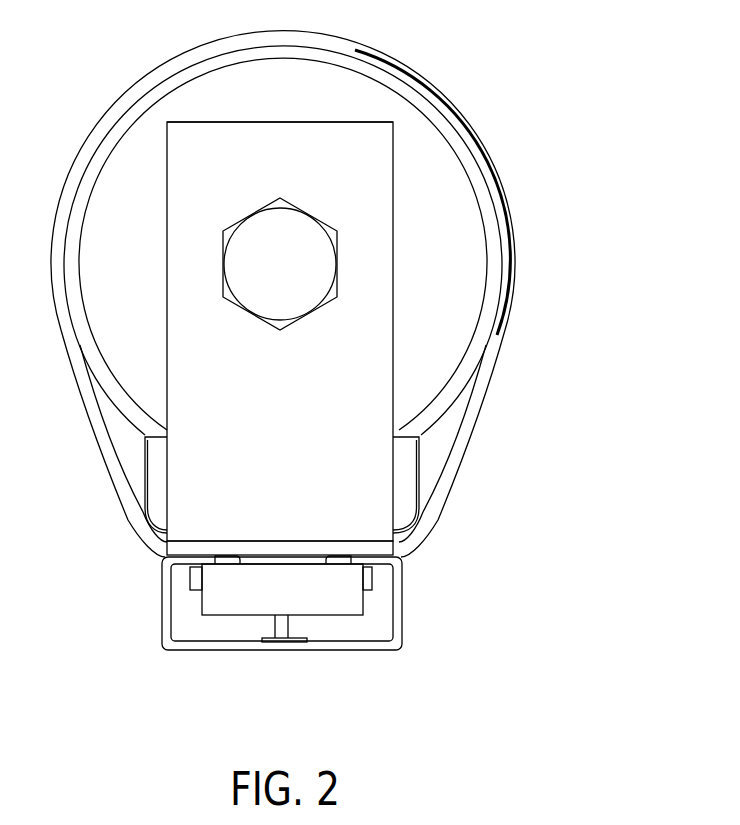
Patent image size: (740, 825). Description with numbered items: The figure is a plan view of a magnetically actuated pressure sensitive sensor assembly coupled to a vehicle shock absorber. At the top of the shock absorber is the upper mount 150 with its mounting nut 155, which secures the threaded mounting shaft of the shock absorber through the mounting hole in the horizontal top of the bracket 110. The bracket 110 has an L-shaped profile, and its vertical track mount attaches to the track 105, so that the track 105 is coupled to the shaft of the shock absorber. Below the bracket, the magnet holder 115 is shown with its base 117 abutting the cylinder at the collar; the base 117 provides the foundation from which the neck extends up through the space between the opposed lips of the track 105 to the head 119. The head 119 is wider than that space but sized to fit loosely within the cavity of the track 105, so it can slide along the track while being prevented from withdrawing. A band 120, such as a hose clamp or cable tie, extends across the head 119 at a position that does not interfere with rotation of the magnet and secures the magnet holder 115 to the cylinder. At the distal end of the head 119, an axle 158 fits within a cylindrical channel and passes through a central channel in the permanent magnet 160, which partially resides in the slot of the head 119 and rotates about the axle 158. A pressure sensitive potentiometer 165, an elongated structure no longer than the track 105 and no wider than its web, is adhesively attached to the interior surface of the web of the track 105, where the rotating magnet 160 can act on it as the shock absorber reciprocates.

The track 105 is at (400, 627).
The bracket 110 is at (375, 335).
The magnet holder 115 is at (147, 452).
The base 117 is at (157, 512).
The head 119 is at (212, 603).
The band 120 is at (465, 442).
The upper mount 150 is at (403, 118).
The mounting nut 155 is at (280, 262).
The axle 158 is at (372, 575).
The permanent magnet 160 is at (285, 625).
The pressure sensitive potentiometer 165 is at (262, 641).